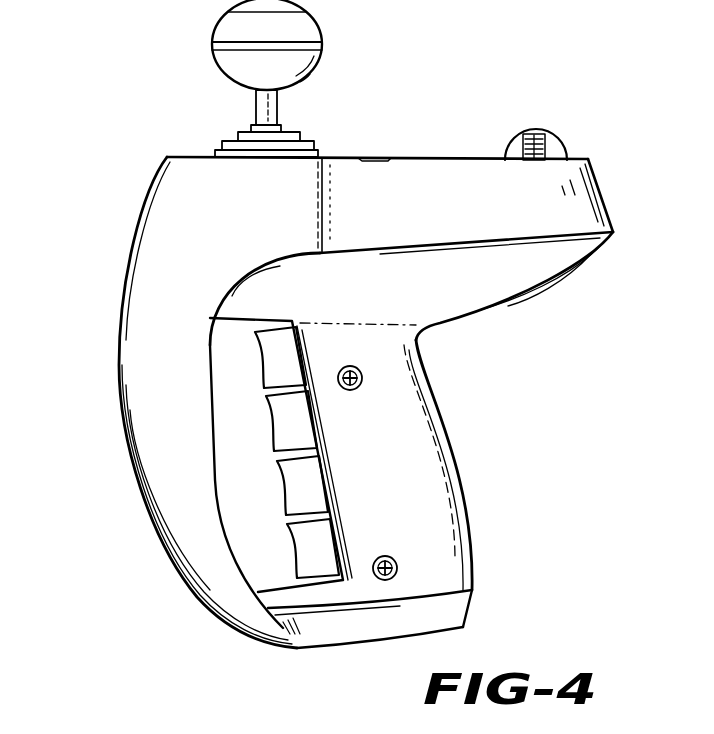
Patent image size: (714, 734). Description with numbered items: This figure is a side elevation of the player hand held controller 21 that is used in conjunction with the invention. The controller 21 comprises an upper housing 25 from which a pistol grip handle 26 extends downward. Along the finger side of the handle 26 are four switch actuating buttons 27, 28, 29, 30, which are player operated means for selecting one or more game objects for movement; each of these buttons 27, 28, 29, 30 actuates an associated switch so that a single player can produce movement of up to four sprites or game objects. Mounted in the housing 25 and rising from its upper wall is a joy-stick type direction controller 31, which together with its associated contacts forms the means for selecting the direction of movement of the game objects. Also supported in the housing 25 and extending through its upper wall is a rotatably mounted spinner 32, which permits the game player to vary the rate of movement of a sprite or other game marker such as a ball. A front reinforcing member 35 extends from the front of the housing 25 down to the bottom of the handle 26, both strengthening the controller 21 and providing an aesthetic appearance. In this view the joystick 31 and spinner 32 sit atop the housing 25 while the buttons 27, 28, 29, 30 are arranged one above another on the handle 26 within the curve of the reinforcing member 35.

The player hand held controller 21 is at (422, 148).
The upper housing 25 is at (607, 197).
The pistol grip handle 26 is at (433, 500).
The switch actuating button 27 is at (262, 364).
The switch actuating button 28 is at (270, 426).
The switch actuating button 29 is at (292, 486).
The switch actuating button 30 is at (300, 548).
The joy-stick type direction controller 31 is at (310, 128).
The spinner 32 is at (541, 137).
The front reinforcing member 35 is at (142, 443).